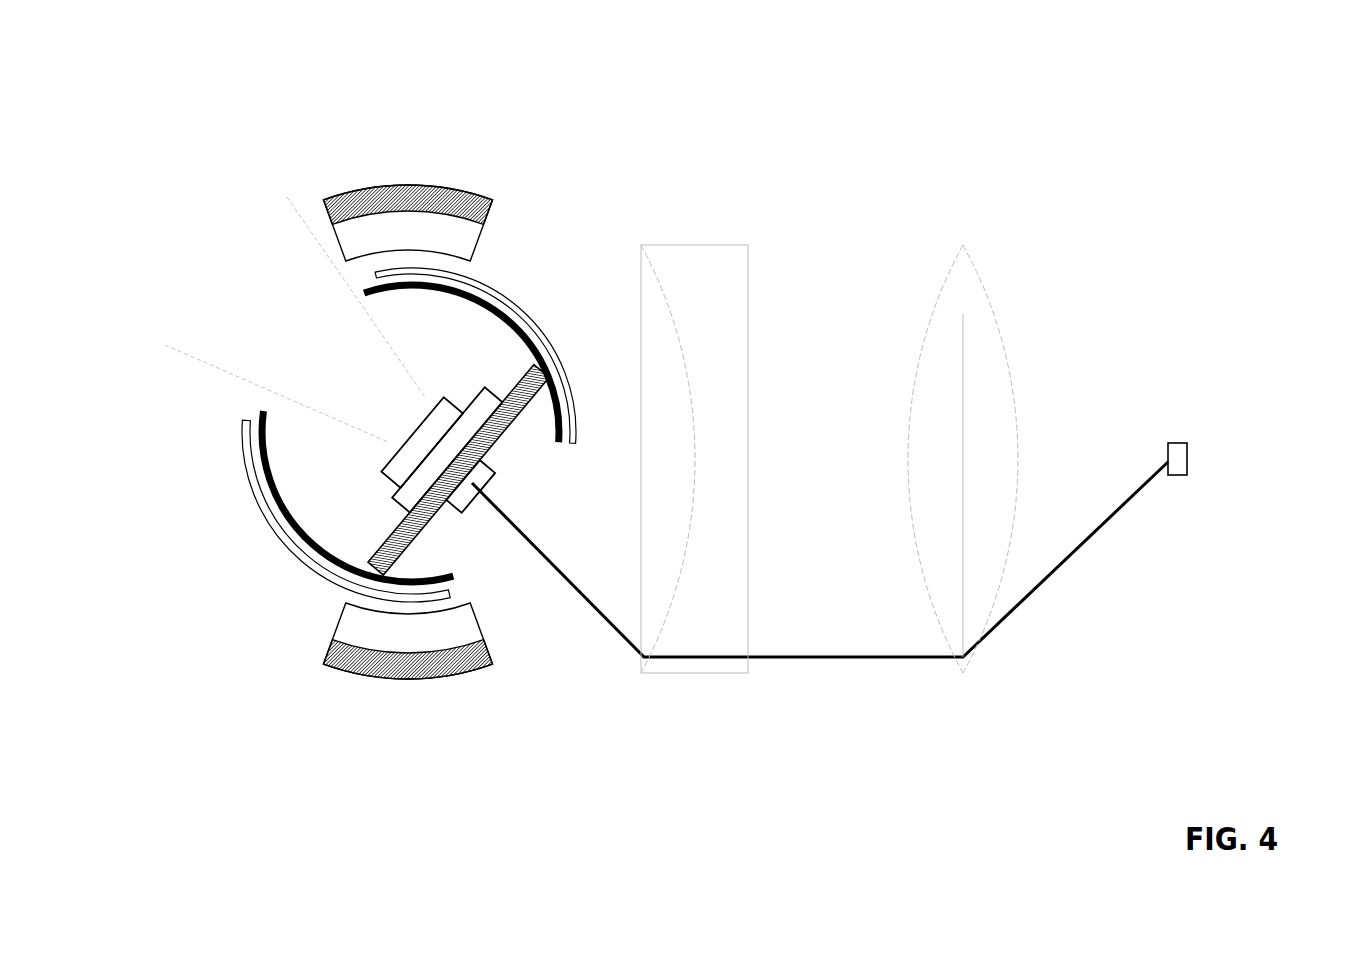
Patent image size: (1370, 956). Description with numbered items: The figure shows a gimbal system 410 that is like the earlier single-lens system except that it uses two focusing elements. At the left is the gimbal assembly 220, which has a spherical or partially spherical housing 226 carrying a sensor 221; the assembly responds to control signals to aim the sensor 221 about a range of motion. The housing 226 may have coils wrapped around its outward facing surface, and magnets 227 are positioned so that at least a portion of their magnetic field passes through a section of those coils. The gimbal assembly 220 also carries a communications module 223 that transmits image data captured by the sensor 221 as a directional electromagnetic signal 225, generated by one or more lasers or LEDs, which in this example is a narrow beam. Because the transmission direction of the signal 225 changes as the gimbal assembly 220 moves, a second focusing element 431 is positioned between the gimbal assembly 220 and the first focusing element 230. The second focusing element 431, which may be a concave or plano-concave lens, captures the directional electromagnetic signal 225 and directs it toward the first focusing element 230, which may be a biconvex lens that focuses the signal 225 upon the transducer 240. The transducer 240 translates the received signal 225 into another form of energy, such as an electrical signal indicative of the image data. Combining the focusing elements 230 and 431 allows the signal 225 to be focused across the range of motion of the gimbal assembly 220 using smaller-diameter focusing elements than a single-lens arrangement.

The gimbal system 410 is at (1214, 116).
The gimbal assembly 220 is at (208, 665).
The sensor 221 is at (442, 383).
The communications module 223 is at (487, 460).
The directional electromagnetic signal 225 is at (1078, 548).
The housing 226 is at (240, 470).
The magnets 227 is at (372, 187).
The first focusing element 230 is at (963, 673).
The transducer 240 is at (1187, 465).
The second focusing element 431 is at (695, 673).